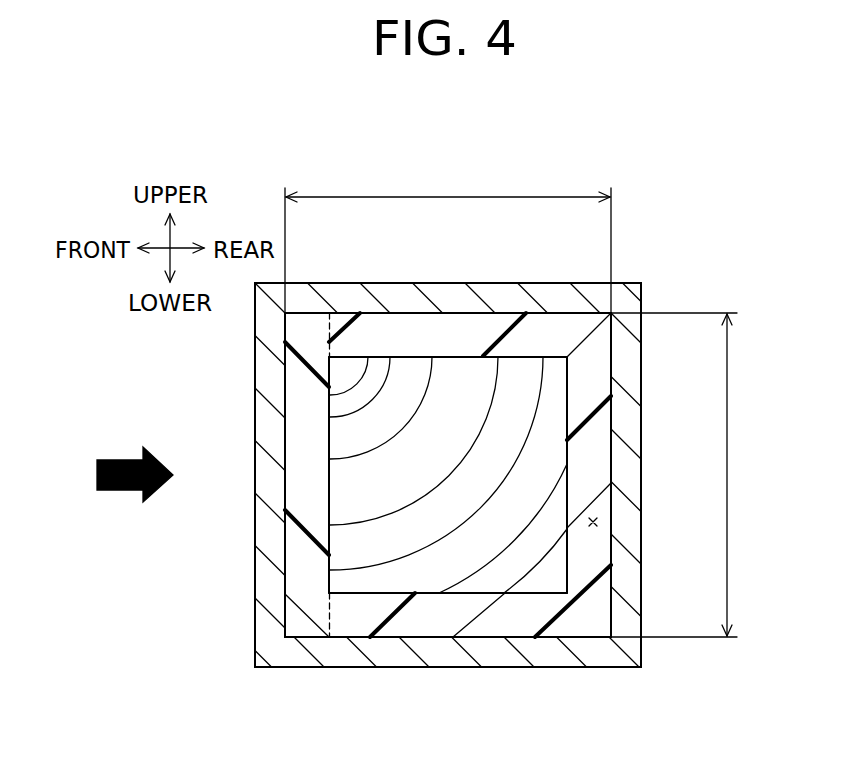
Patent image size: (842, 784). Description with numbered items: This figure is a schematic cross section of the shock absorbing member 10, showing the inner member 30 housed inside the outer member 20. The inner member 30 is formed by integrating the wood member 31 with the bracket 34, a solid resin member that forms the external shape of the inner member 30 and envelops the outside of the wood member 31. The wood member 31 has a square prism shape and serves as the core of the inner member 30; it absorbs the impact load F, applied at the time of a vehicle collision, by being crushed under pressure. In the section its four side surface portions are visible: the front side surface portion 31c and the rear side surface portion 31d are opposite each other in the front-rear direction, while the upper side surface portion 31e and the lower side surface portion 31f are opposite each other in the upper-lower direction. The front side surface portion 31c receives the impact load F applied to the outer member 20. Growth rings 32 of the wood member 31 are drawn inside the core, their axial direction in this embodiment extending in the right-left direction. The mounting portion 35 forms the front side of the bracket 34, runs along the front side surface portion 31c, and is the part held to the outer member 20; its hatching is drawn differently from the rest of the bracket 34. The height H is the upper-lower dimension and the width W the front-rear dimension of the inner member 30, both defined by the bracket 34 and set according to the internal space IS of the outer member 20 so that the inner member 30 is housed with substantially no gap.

The shock absorbing member 10 is at (673, 239).
The outer member 20 is at (388, 280).
The inner member 30 is at (422, 716).
The wood member 31 is at (430, 572).
The front side surface portion 31c is at (328, 514).
The rear side surface portion 31d is at (567, 480).
The upper side surface portion 31e is at (447, 355).
The lower side surface portion 31f is at (463, 595).
The growth rings 32 is at (367, 444).
The bracket 34 is at (363, 618).
The mounting portion 35 is at (307, 397).
The internal space IS is at (598, 522).
The impact load F is at (108, 458).
The width W is at (448, 240).
The height H is at (687, 475).